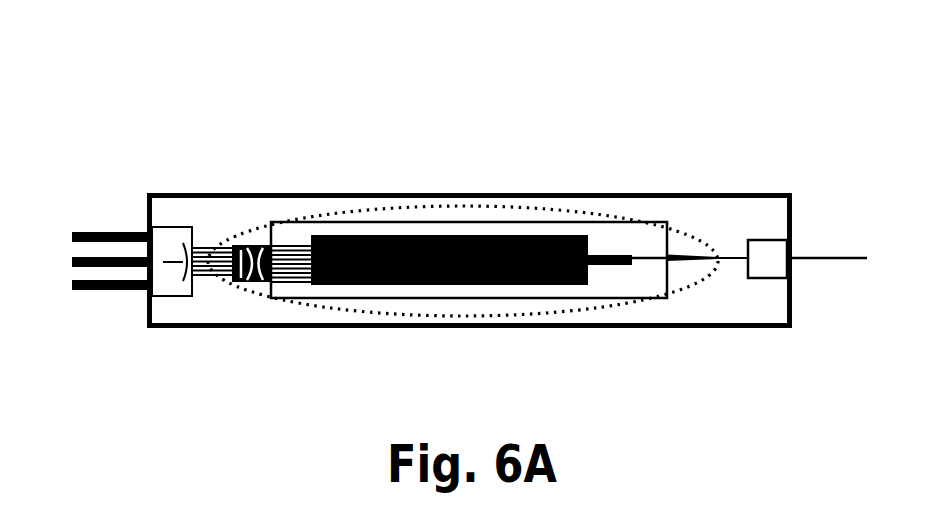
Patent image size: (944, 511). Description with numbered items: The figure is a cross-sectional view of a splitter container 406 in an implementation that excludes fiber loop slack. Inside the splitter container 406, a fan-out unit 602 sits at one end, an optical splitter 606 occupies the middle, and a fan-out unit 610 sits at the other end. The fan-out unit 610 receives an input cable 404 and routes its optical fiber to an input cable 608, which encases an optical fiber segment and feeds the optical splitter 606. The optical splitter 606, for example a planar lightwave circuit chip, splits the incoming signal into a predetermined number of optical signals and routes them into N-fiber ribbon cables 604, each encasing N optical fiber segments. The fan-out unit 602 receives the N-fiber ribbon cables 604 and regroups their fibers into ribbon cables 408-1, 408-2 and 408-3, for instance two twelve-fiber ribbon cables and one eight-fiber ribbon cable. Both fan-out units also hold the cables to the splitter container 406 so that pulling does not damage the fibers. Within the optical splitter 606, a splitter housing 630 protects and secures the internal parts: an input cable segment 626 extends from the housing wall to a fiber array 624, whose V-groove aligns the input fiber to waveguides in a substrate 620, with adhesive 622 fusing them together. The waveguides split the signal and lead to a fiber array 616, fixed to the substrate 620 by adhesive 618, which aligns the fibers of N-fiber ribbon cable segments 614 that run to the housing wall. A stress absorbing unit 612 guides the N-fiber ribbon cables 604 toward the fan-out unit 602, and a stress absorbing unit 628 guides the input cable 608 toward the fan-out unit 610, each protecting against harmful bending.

The input cable 404 is at (828, 258).
The splitter container 406 is at (424, 193).
The ribbon cable 408-1 is at (83, 232).
The ribbon cable 408-2 is at (132, 257).
The ribbon cable 408-3 is at (88, 290).
The fan-out unit 602 is at (182, 231).
The N-fiber ribbon cables 604 is at (165, 282).
The optical splitter 606 is at (508, 208).
The input cable 608 is at (728, 258).
The fan-out unit 610 is at (777, 260).
The stress absorbing unit 612 is at (241, 268).
The N-fiber ribbon cable segments 614 is at (250, 246).
The fiber array 616 is at (330, 277).
The adhesive 618 is at (352, 235).
The substrate 620 is at (519, 262).
The adhesive 622 is at (590, 258).
The fiber array 624 is at (613, 265).
The input cable segment 626 is at (658, 258).
The stress absorbing unit 628 is at (690, 260).
The splitter housing 630 is at (417, 298).